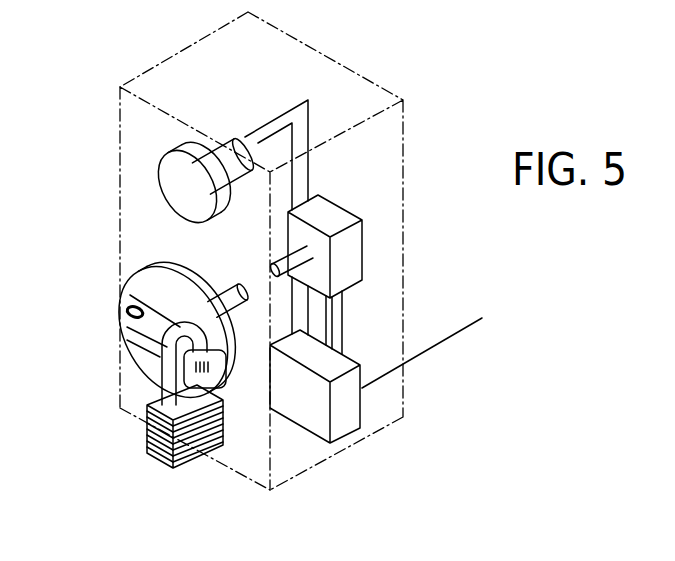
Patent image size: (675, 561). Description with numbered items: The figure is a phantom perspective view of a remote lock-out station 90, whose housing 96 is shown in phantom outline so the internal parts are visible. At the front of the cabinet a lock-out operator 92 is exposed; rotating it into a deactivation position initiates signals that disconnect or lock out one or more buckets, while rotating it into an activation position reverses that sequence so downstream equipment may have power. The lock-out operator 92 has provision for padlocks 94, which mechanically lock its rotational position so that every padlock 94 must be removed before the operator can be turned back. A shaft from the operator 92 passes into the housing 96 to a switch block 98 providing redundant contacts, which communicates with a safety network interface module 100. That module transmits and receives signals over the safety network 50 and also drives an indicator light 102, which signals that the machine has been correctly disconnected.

The safety network 50 is at (437, 343).
The remote lock-out station 90 is at (405, 124).
The lock-out operator 92 is at (160, 286).
The padlocks 94 is at (193, 458).
The housing 96 is at (142, 133).
The switch block 98 is at (352, 257).
The safety network interface module 100 is at (343, 420).
The indicator light 102 is at (178, 188).